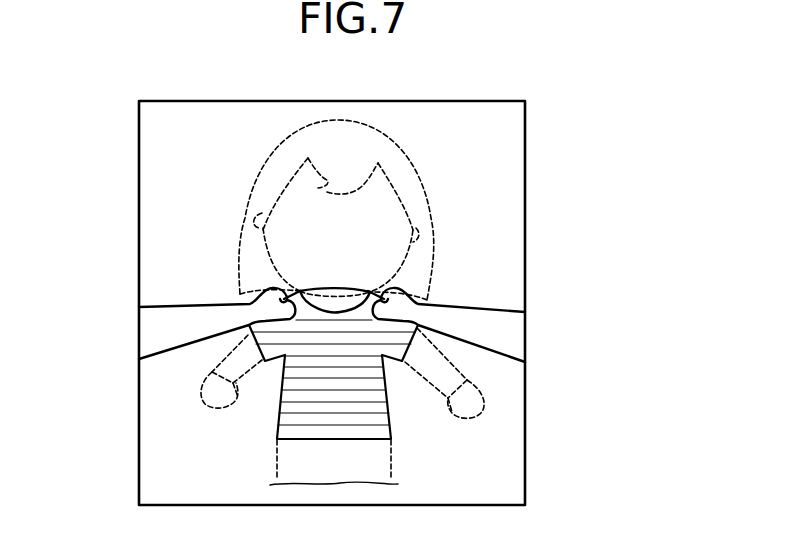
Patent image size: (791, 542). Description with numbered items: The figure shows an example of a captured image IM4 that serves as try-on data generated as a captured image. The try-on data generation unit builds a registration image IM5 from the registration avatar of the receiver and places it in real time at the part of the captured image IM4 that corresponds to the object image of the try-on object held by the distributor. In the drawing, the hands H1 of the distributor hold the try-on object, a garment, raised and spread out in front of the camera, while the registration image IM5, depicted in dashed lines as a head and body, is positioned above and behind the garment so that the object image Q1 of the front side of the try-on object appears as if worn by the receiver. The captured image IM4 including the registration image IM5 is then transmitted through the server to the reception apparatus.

The captured image IM4 is at (525, 115).
The registration image IM5 is at (243, 228).
The hands H1 is at (471, 298).
The object image Q1 is at (402, 405).